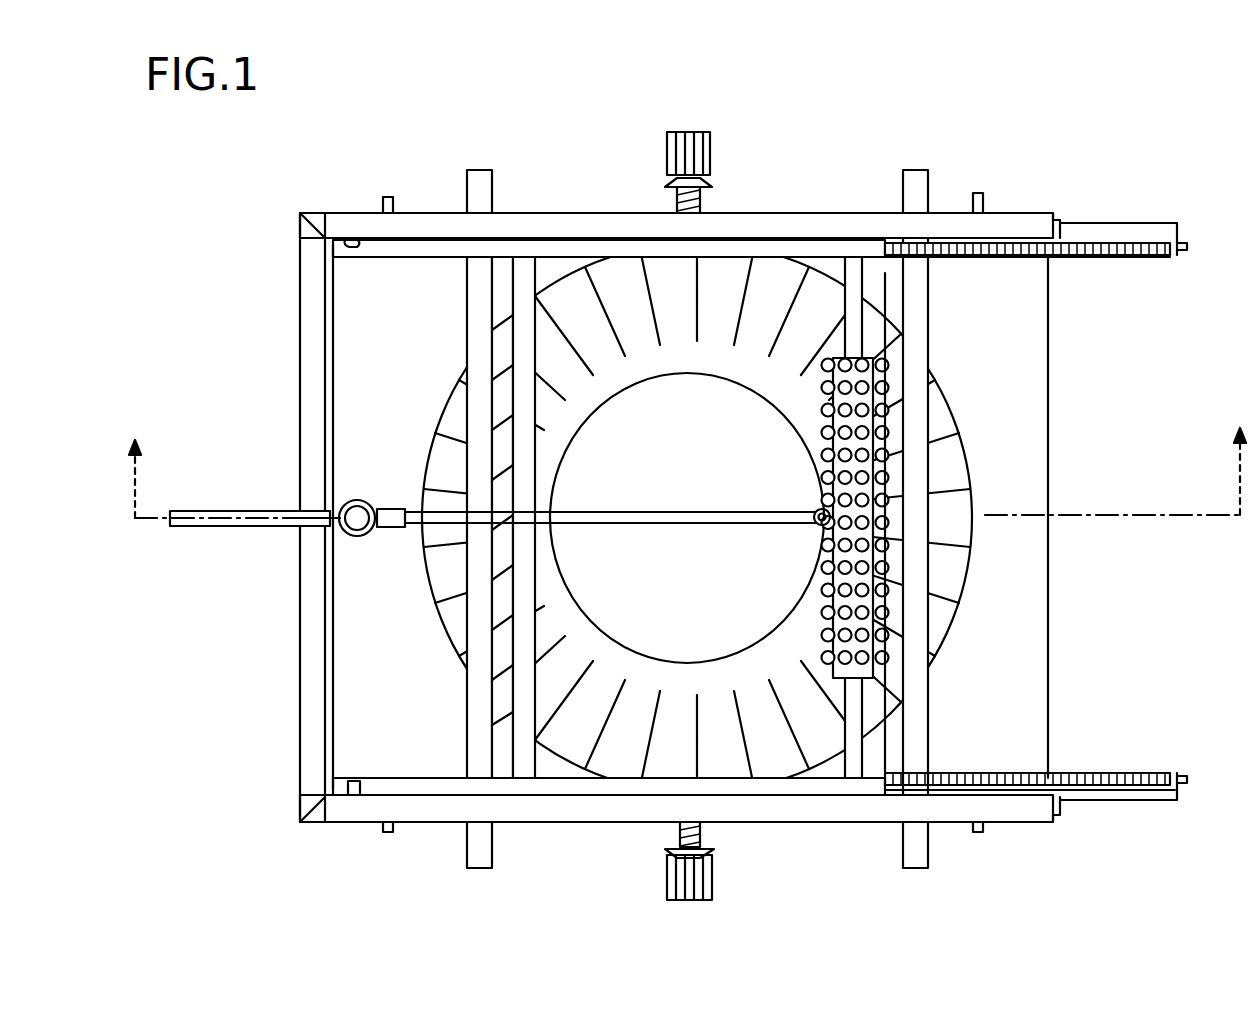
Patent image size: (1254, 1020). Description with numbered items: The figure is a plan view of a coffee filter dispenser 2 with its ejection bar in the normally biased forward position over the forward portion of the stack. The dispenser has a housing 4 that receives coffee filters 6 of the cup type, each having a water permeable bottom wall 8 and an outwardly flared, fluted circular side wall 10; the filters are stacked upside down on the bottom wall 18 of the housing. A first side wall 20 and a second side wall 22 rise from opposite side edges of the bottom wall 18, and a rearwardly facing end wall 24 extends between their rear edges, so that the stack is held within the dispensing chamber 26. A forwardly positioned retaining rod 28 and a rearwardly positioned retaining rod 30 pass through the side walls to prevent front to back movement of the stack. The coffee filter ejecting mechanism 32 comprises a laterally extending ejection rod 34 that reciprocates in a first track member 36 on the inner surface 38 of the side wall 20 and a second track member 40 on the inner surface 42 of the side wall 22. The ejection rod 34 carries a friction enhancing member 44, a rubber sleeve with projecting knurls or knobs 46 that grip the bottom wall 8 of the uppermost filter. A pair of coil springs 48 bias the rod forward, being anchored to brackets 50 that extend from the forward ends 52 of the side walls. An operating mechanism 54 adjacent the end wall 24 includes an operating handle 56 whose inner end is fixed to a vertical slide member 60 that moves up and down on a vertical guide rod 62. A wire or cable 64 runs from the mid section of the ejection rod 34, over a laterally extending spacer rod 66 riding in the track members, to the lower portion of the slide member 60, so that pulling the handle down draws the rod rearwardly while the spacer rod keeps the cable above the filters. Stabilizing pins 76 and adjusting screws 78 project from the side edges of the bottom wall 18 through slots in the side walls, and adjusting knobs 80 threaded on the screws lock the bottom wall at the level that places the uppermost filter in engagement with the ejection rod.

The coffee filter dispenser 2 is at (290, 776).
The housing 4 is at (546, 212).
The coffee filters 6 is at (942, 441).
The bottom wall 8 is at (628, 415).
The circular side wall 10 is at (440, 395).
The bottom wall 18 is at (1050, 594).
The first side wall 20 is at (594, 822).
The second side wall 22 is at (794, 212).
The end wall 24 is at (298, 292).
The dispensing chamber 26 is at (345, 616).
The forwardly positioned retaining rod 28 is at (928, 288).
The rearwardly positioned retaining rod 30 is at (465, 744).
The coffee filter ejecting mechanism 32 is at (862, 750).
The ejection rod 34 is at (862, 325).
The first track member 36 is at (358, 795).
The inner surface 38 is at (436, 782).
The second track member 40 is at (446, 262).
The inner surface 42 is at (342, 235).
The friction enhancing member 44 is at (880, 545).
The friction enhancing knurls or knobs 46 is at (822, 455).
The coil springs 48 is at (1152, 258).
The brackets 50 is at (1133, 222).
The forward ends 52 is at (1052, 213).
The operating mechanism 54 is at (360, 498).
The operating handle 56 is at (216, 510).
The vertical slide member 60 is at (340, 522).
The vertical guide rod 62 is at (370, 530).
The wire or cable 64 is at (684, 526).
The spacer rod 66 is at (528, 575).
The stabilizing pins 76 is at (388, 196).
The adjusting screws 78 is at (702, 833).
The adjusting knobs 80 is at (665, 150).